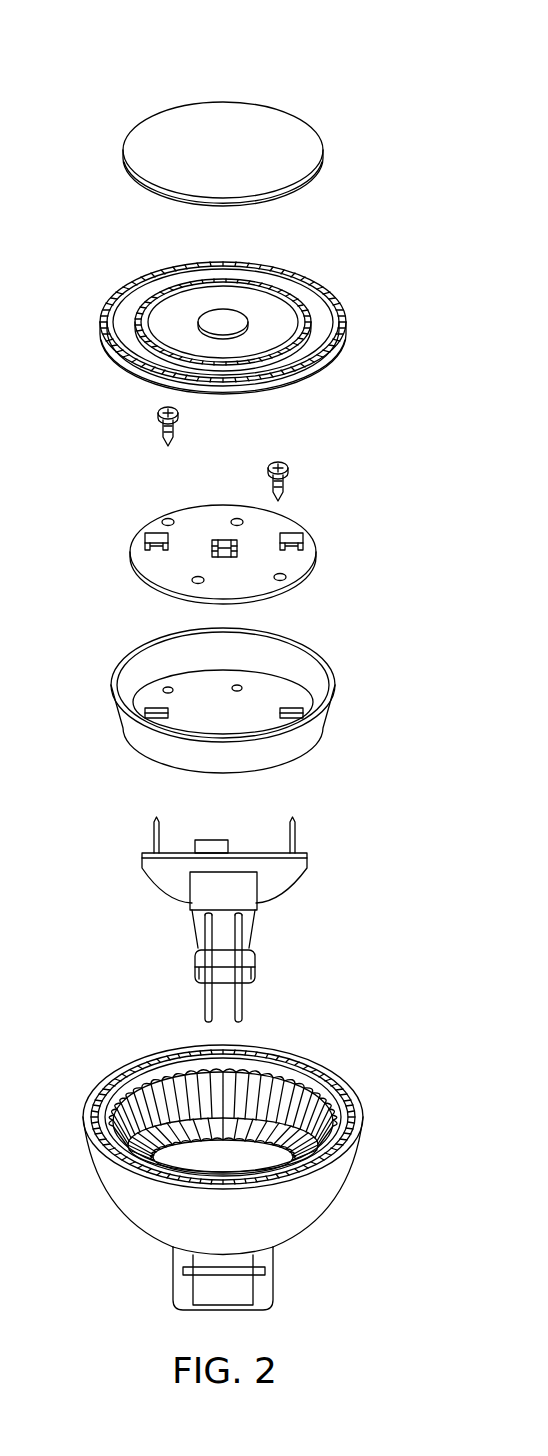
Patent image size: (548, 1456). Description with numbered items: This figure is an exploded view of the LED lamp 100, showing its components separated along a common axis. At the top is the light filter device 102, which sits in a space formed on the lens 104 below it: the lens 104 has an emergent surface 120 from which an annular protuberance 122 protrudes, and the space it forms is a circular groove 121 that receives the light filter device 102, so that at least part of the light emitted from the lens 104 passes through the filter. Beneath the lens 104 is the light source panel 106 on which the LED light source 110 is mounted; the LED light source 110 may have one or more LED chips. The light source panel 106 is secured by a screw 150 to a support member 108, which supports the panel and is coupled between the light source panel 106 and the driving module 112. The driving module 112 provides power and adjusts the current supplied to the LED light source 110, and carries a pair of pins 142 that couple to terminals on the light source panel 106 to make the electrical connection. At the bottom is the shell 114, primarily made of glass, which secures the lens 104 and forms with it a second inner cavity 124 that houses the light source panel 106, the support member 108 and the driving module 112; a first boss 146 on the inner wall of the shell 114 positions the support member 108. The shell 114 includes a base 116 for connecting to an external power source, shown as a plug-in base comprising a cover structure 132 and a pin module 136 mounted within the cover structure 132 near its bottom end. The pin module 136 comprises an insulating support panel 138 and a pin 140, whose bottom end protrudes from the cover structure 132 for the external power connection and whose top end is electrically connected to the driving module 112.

The LED lamp 100 is at (365, 75).
The light filter device 102 is at (288, 150).
The lens 104 is at (226, 301).
The light source panel 106 is at (238, 536).
The support member 108 is at (300, 670).
The LED light source 110 is at (218, 548).
The driving module 112 is at (235, 915).
The shell 114 is at (226, 1175).
The base 116 is at (241, 1265).
The emergent surface 120 is at (262, 302).
The circular groove 121 is at (175, 282).
The annular protuberance 122 is at (137, 290).
The second inner cavity 124 is at (215, 1107).
The cover structure 132 is at (185, 1293).
The pin module 136 is at (245, 950).
The insulating support panel 138 is at (196, 972).
The pin 140 is at (208, 1012).
The pins 142 is at (152, 845).
The first boss 146 is at (128, 1140).
The screw 150 is at (280, 465).